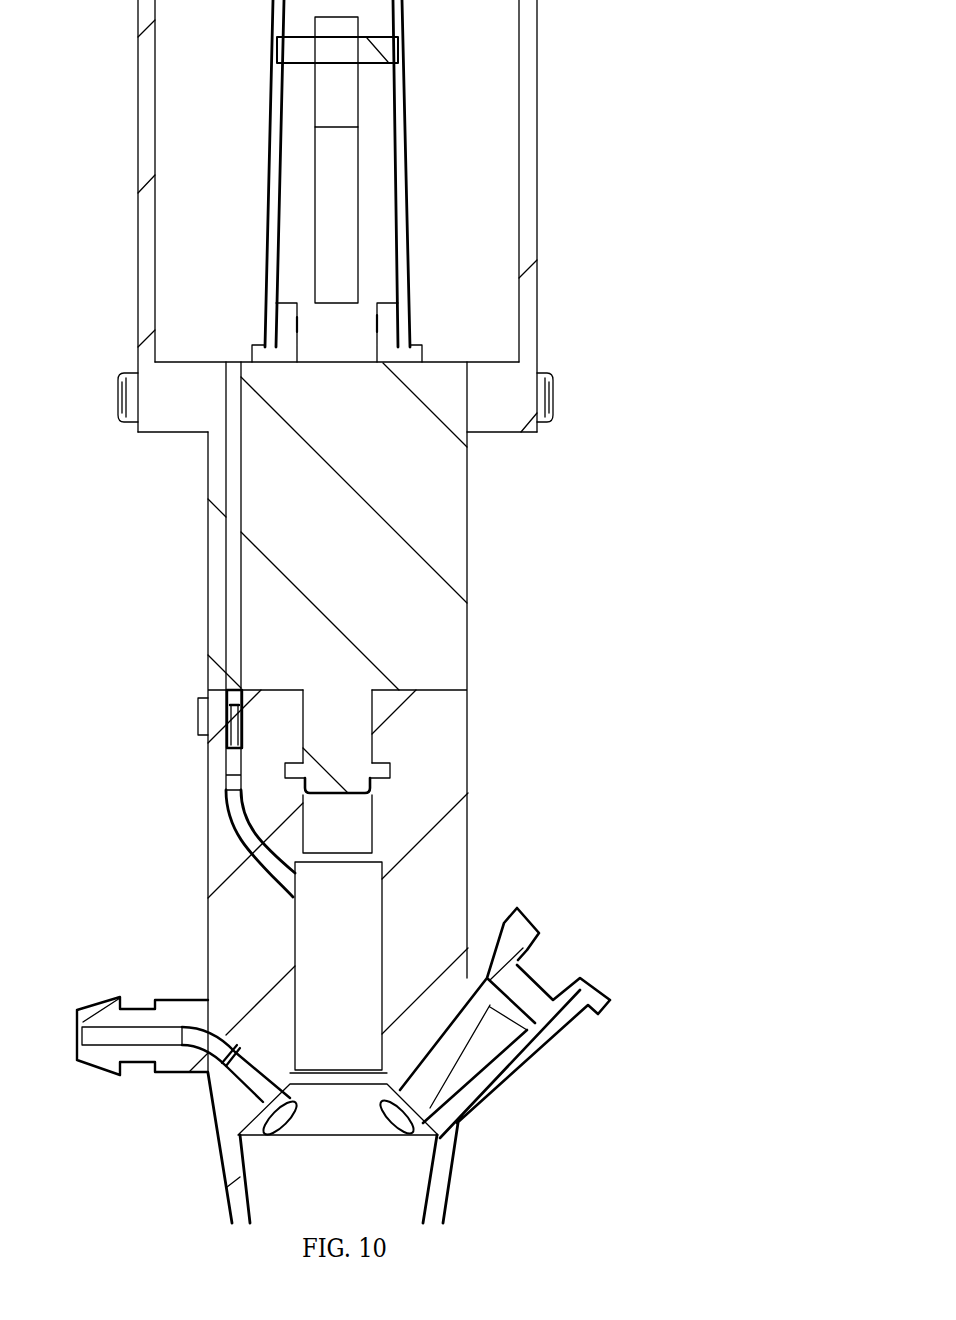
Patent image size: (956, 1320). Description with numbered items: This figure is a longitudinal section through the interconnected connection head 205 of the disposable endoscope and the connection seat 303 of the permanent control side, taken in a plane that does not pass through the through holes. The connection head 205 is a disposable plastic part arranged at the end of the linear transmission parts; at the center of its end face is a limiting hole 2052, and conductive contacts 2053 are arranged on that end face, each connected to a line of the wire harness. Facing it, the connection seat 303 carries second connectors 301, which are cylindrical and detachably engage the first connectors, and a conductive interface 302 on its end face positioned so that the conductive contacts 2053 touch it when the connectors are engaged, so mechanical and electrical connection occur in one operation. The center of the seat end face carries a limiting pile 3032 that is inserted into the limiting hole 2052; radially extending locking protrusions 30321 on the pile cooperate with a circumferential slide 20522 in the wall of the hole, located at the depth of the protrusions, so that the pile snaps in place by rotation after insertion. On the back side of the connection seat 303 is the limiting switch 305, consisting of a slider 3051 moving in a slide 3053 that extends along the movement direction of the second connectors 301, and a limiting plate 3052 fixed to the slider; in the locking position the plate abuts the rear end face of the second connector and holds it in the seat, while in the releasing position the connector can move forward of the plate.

The limiting switch 305 is at (300, 50).
The slider 3051 is at (385, 42).
The limiting plate 3052 is at (342, 103).
The slide 3053 is at (345, 203).
The second connectors 301 is at (383, 332).
The connection seat 303 is at (455, 490).
The conductive interface 302 is at (233, 688).
The conductive contacts 2053 is at (200, 712).
The limiting pile 3032 is at (350, 727).
The locking protrusions 30321 is at (293, 768).
The circumferential slide 20522 is at (390, 765).
The limiting hole 2052 is at (353, 820).
The connection head 205 is at (438, 1200).